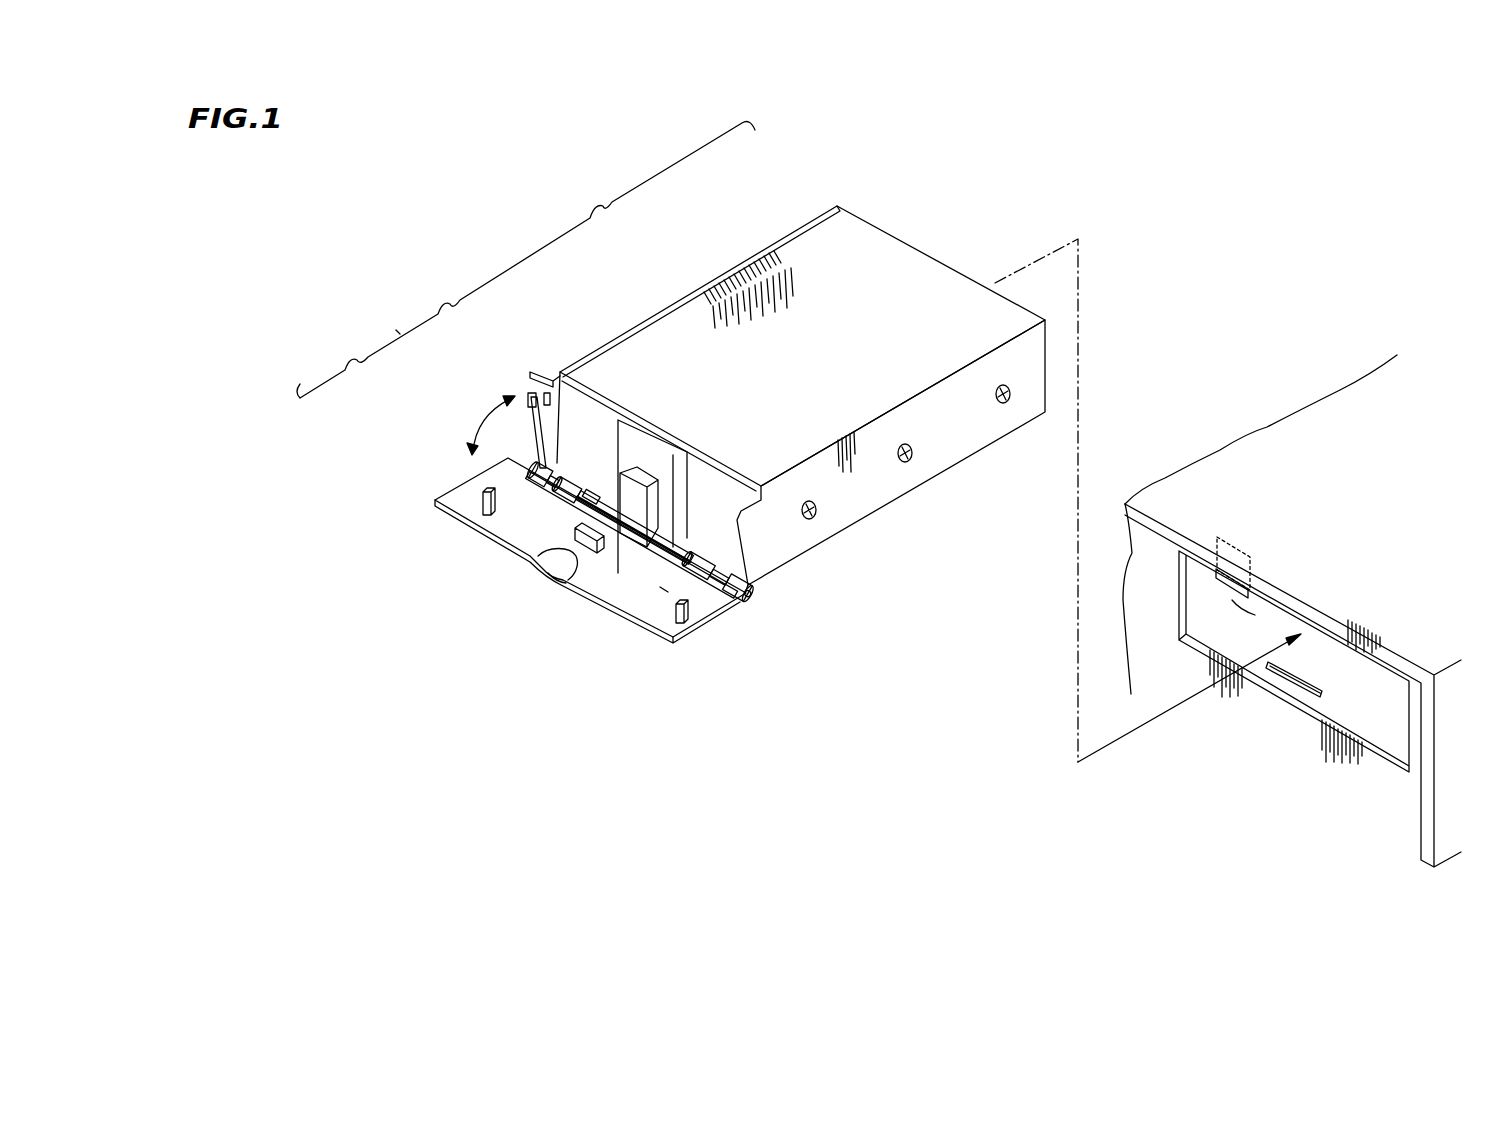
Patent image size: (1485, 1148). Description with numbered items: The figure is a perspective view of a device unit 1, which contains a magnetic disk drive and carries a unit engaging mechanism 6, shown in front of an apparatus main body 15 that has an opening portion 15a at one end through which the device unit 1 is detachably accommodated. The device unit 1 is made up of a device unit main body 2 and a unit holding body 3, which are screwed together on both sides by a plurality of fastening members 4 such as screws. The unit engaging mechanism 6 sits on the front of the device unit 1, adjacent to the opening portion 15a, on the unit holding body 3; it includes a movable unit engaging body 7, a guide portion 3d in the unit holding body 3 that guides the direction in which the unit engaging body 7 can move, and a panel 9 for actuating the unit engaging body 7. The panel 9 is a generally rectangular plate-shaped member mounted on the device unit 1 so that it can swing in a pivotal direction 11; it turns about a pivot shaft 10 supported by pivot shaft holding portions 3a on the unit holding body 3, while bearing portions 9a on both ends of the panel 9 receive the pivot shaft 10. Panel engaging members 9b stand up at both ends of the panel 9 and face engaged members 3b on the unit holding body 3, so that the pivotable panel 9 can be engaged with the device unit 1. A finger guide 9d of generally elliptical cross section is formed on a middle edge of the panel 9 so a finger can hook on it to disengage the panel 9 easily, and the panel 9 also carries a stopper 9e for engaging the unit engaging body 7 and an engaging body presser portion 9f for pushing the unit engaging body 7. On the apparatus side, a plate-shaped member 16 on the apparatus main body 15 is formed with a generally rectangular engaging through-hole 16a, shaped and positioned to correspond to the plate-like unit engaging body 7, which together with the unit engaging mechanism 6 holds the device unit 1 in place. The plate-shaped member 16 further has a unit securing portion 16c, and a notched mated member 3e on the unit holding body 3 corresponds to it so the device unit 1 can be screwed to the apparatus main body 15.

The device unit 1 is at (578, 228).
The device unit main body 2 is at (952, 282).
The unit holding body 3 is at (860, 513).
The pivot shaft holding portions 3a is at (549, 497).
The engaged members 3b is at (565, 414).
The guide portion 3d is at (660, 587).
The mated member 3e is at (534, 384).
The fastening members 4 is at (816, 524).
The unit engaging mechanism 6 is at (396, 330).
The unit engaging body 7 is at (636, 500).
The panel 9 is at (473, 483).
The bearing portions 9a is at (537, 470).
The panel engaging members 9b is at (483, 497).
The finger guide 9d is at (541, 557).
The stopper 9e is at (575, 547).
The engaging body presser portion 9f is at (588, 554).
The pivot shaft 10 is at (728, 598).
The pivotal direction 11 is at (487, 420).
The apparatus main body 15 is at (1333, 407).
The opening portion 15a is at (1255, 615).
The plate-shaped member 16 is at (1395, 715).
The engaging through-hole 16a is at (1283, 650).
The unit securing portion 16c is at (1217, 540).